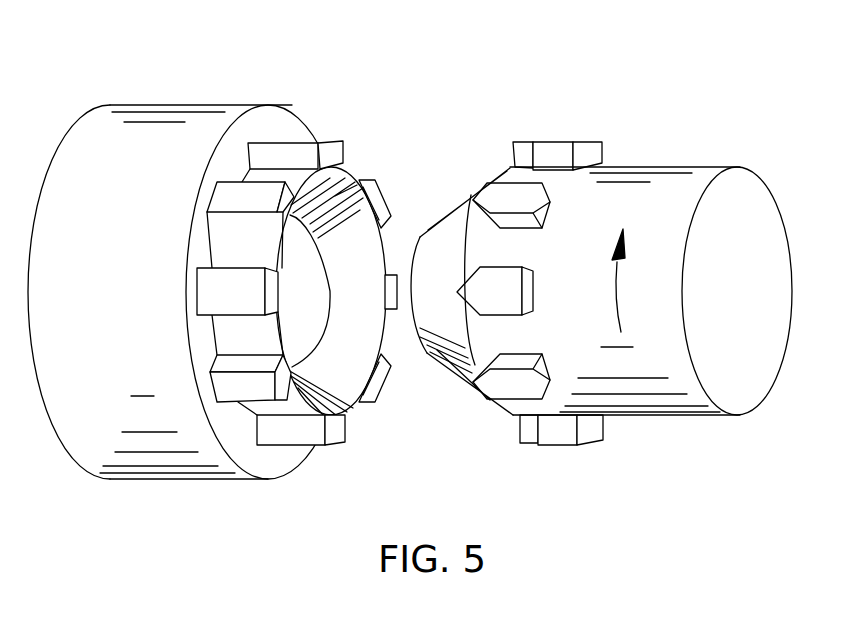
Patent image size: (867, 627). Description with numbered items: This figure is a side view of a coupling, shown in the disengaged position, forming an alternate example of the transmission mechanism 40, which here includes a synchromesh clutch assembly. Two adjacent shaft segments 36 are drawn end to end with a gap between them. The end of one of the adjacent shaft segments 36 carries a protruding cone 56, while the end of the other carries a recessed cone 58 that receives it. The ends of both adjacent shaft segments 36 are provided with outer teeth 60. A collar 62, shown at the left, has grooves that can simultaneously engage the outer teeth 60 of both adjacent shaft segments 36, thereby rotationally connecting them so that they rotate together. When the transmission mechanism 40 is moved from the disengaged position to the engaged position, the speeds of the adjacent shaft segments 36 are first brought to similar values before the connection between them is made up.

The transmission mechanism 40 is at (410, 240).
The collar 62 is at (143, 118).
The recessed cone 58 is at (358, 168).
The outer teeth 60 is at (290, 142).
The adjacent shaft segments 36 is at (655, 181).
The protruding cone 56 is at (441, 373).